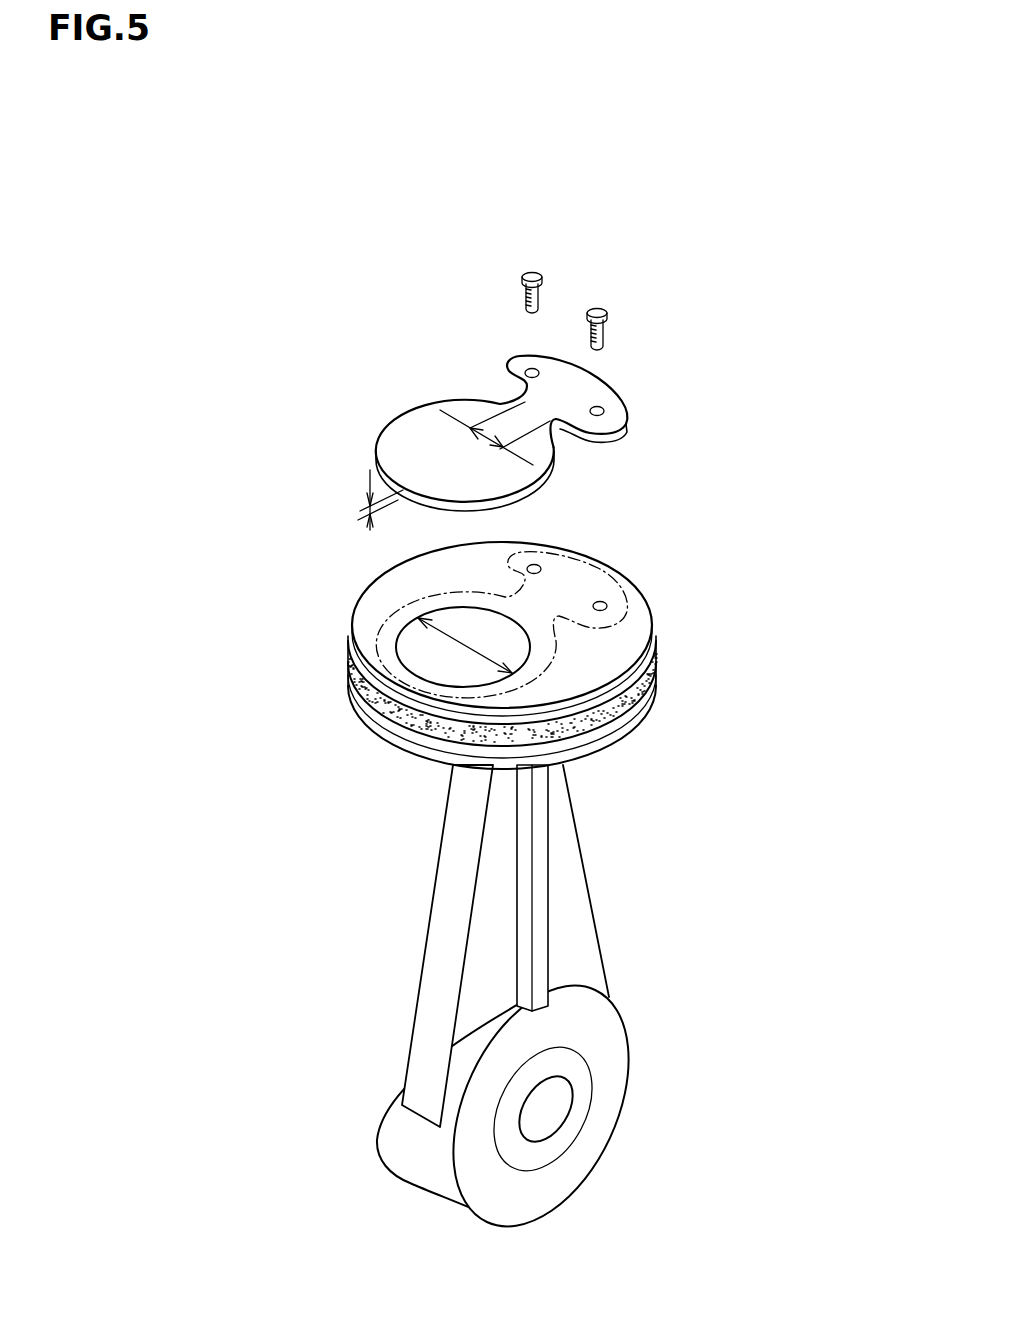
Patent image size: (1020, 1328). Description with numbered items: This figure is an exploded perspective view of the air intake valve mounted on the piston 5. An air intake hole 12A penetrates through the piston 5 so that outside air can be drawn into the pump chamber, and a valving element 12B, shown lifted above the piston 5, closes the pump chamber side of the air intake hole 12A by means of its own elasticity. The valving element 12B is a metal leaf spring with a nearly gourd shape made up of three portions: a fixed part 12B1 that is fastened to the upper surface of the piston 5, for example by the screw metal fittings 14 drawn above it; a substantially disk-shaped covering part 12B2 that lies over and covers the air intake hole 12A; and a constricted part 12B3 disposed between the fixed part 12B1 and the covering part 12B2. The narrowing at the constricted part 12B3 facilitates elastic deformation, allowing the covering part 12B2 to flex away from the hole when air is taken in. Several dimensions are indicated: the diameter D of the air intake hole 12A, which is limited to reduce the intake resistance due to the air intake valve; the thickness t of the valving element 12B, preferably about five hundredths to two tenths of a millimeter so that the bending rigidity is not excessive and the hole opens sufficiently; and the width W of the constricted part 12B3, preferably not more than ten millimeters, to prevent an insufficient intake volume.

The piston 5 is at (583, 670).
The air intake hole 12A is at (420, 676).
The valving element 12B is at (475, 378).
The fixed part 12B1 is at (583, 387).
The covering part 12B2 is at (417, 453).
The constricted part 12B3 is at (529, 412).
The screw metal fittings 14 is at (607, 330).
The width of the constricted part W is at (525, 402).
The thickness of the valving element t is at (367, 513).
The diameter of the air intake hole D is at (466, 652).